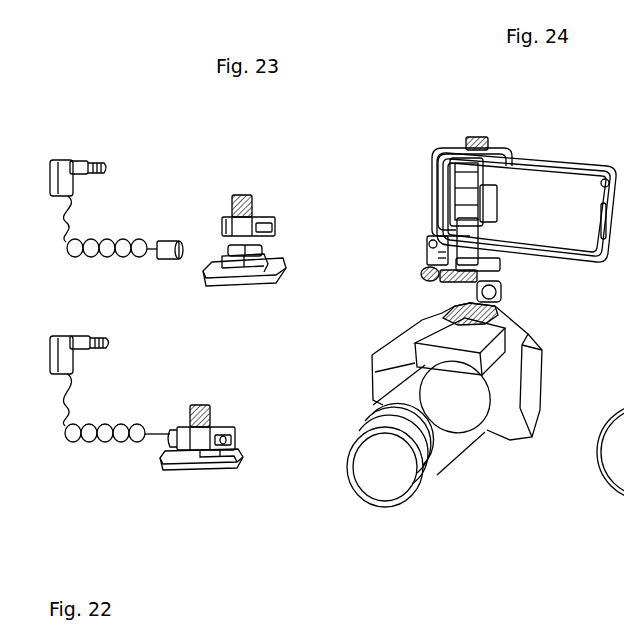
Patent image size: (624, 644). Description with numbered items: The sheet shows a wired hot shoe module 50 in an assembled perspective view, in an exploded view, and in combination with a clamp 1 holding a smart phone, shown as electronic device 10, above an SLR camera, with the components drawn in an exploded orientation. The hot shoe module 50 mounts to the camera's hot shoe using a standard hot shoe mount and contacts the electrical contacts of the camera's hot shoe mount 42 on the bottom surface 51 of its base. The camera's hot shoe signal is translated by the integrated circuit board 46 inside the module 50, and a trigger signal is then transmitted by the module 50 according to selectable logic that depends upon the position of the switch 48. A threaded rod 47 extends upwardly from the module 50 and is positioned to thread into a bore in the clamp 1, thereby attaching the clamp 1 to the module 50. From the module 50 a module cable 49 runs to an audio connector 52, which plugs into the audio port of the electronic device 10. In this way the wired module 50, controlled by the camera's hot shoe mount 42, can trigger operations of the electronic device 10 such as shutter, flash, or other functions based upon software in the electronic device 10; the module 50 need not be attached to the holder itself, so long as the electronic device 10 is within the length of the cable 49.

In FIG. 24, the clamp 1 is at (503, 136).
In FIG. 24, the electronic device 10 is at (573, 150).
In FIG. 24, the hot shoe mount 42 is at (445, 313).
In FIG. 23, the integrated circuit board 46 is at (270, 250).
In FIG. 23, the thumb screw 47 is at (254, 190).
In FIG. 23, the switch 48 is at (283, 228).
In FIG. 22, the switch 48 is at (240, 437).
In FIG. 23, the module cable 49 is at (116, 209).
In FIG. 22, the module cable 49 is at (110, 445).
In FIG. 24, the module cable 49 is at (424, 279).
In FIG. 22, the wired hot shoe module 50 is at (176, 474).
In FIG. 24, the wired hot shoe module 50 is at (506, 296).
In FIG. 22, the base bottom surface 51 is at (195, 472).
In FIG. 24, the audio connector 52 is at (426, 233).